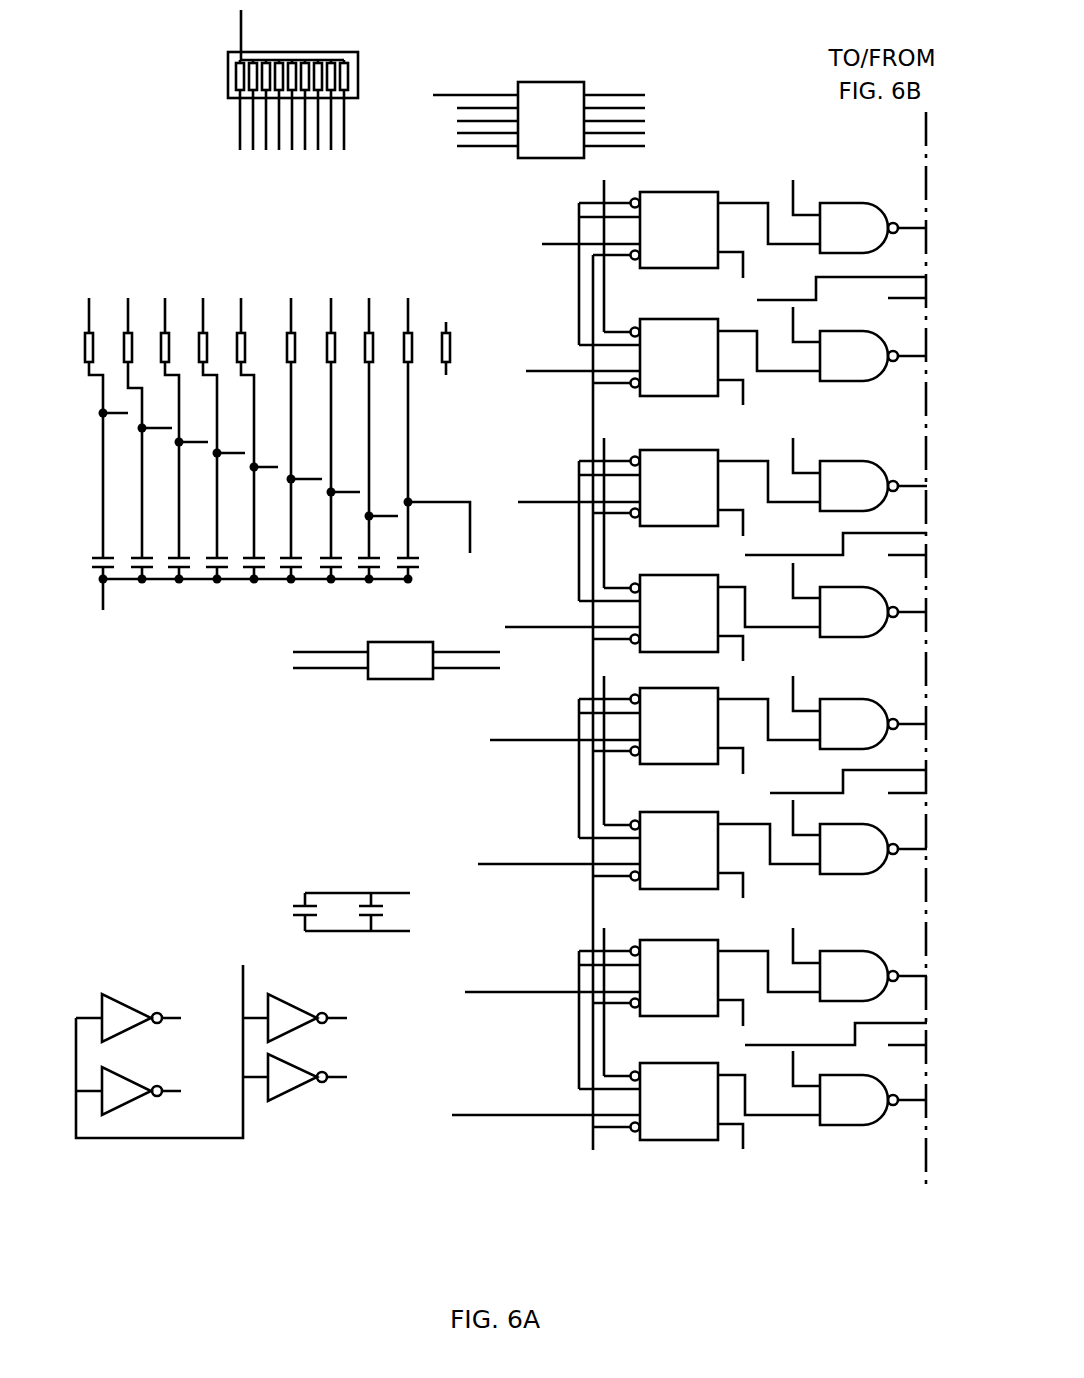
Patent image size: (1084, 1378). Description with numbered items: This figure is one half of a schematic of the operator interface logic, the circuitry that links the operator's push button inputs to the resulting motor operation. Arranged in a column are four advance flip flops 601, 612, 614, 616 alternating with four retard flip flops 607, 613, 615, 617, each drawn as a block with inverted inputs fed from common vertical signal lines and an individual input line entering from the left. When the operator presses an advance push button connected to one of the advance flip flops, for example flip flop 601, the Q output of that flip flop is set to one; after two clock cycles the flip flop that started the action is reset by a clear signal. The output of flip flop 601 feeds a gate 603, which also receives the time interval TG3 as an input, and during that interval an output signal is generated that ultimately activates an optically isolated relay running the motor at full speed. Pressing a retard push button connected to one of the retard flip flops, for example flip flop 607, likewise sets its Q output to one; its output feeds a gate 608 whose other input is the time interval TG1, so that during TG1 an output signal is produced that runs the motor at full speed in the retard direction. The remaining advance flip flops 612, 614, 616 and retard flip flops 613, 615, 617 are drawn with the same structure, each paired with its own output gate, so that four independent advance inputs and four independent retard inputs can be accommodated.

The advance flip flop 601 is at (661, 242).
The gate 603 is at (835, 240).
The retard flip flop 607 is at (661, 369).
The gate 608 is at (835, 368).
The advance flip flop 612 is at (661, 500).
The retard flip flop 613 is at (661, 625).
The advance flip flop 614 is at (661, 738).
The retard flip flop 615 is at (661, 862).
The advance flip flop 616 is at (661, 990).
The retard flip flop 617 is at (661, 1113).